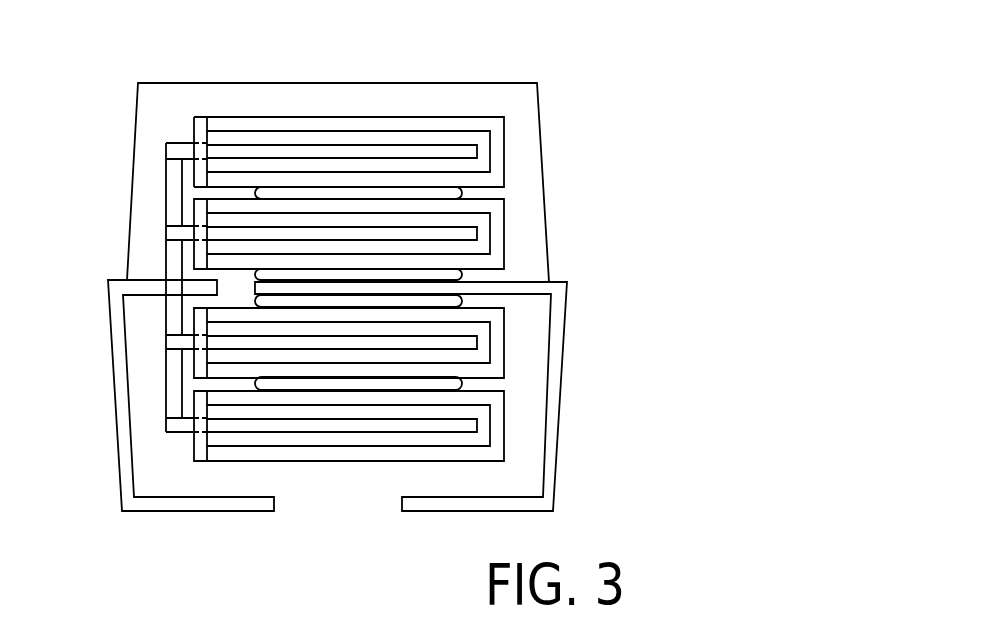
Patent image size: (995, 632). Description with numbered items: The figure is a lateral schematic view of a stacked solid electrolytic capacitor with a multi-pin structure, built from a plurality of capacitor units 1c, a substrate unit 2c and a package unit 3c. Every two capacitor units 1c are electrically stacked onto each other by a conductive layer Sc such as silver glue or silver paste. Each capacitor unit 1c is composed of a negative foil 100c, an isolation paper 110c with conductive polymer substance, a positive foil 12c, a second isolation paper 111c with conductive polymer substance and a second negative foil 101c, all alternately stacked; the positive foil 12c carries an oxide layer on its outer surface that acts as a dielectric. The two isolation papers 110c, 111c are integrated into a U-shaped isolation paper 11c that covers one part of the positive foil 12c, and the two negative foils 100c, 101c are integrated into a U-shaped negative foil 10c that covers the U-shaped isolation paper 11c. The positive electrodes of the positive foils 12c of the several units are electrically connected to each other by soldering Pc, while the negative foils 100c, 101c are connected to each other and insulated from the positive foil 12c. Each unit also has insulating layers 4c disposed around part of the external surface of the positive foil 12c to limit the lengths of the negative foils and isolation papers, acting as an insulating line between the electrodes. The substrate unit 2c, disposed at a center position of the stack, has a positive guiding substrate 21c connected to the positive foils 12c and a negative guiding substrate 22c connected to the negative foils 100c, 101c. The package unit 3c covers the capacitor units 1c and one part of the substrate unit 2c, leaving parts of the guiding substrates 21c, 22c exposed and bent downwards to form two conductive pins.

The capacitor unit 1c is at (467, 230).
The U-shaped negative foil 10c is at (444, 93).
The negative foil 100c is at (387, 122).
The negative foil 101c is at (391, 186).
The U-shaped isolation paper 11c is at (450, 120).
The isolation paper 110c is at (434, 136).
The isolation paper 111c is at (444, 165).
The positive foil 12c is at (466, 150).
The substrate unit 2c is at (337, 442).
The positive guiding substrate 21c is at (252, 508).
The negative guiding substrate 22c is at (265, 559).
The package unit 3c is at (134, 91).
The insulating layer 4c is at (202, 115).
The soldering Pc is at (164, 176).
The conductive layer Sc is at (465, 193).